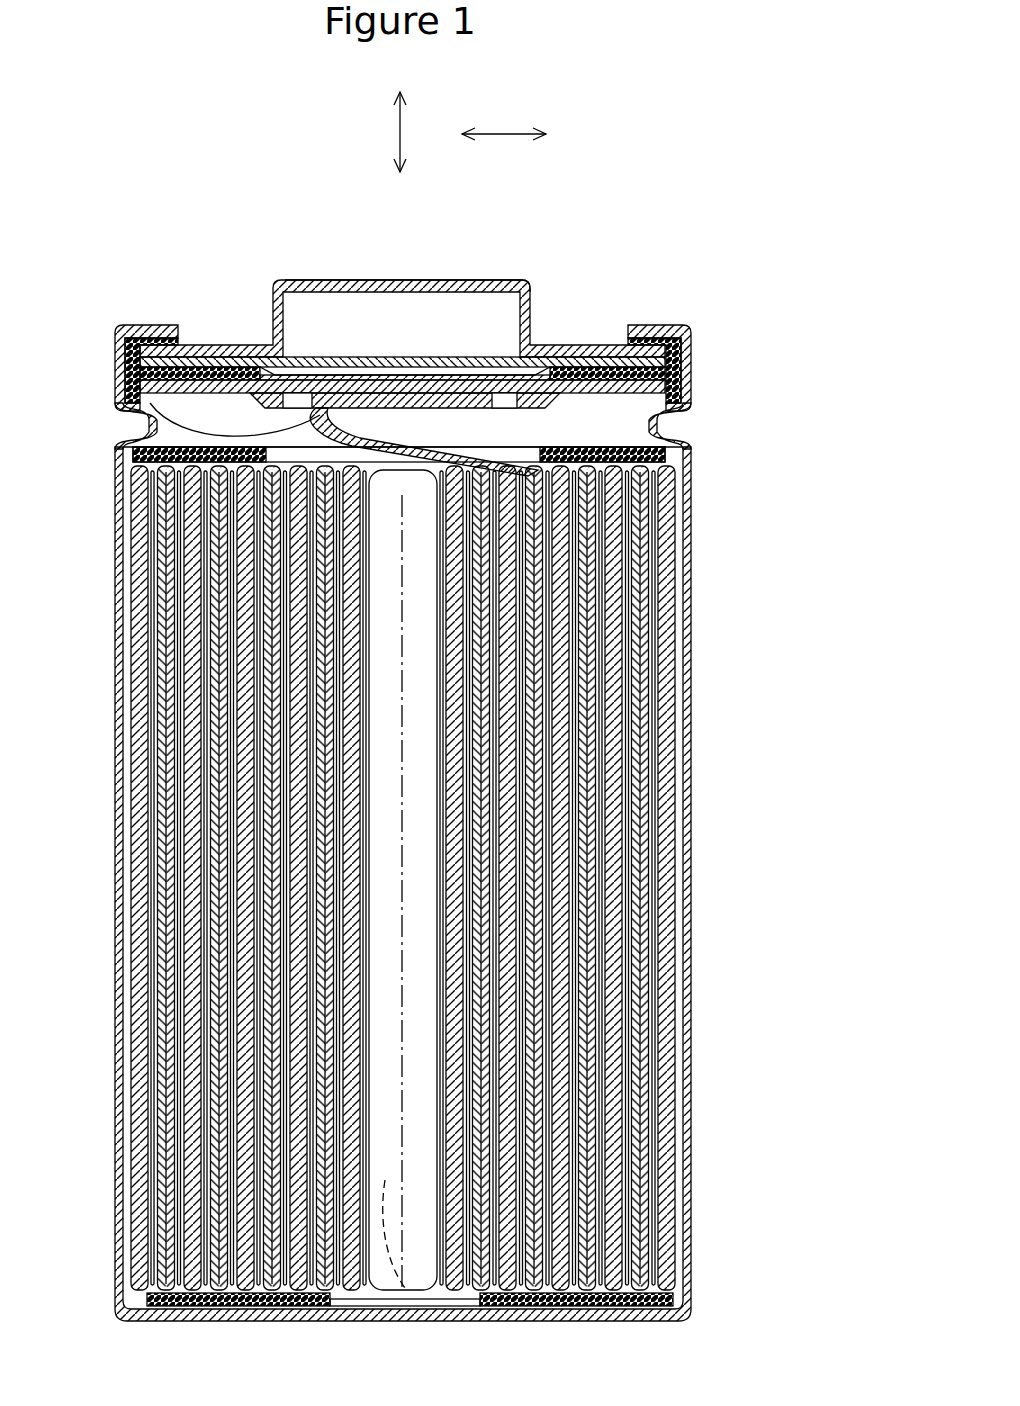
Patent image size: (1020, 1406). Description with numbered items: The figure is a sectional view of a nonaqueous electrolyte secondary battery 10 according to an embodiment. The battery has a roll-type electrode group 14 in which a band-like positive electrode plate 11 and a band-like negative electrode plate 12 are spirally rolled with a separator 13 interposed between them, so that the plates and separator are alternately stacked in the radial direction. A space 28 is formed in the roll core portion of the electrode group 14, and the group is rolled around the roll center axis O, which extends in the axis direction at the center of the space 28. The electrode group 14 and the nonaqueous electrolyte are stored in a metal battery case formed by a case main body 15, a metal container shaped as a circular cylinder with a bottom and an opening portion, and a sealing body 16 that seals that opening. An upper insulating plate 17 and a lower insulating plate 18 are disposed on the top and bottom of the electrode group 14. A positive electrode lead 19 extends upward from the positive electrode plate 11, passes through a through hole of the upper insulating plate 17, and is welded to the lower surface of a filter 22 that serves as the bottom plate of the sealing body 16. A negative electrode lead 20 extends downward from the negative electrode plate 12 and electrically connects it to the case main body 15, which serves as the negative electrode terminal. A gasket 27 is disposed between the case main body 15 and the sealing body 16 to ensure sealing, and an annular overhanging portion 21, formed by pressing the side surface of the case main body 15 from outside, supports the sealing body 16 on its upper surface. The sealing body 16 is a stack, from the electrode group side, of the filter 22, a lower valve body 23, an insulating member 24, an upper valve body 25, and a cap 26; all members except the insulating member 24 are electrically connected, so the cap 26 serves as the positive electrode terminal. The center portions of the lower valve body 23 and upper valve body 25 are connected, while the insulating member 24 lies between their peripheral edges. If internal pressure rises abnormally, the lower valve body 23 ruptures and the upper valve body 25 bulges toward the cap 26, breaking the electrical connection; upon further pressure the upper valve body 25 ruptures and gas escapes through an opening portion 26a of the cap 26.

The nonaqueous electrolyte secondary battery 10 is at (651, 173).
The positive electrode plate 11 is at (637, 962).
The negative electrode plate 12 is at (667, 1000).
The separator 13 is at (682, 1040).
The electrode group 14 is at (762, 950).
The case main body 15 is at (690, 325).
The sealing body 16 is at (413, 279).
The upper insulating plate 17 is at (690, 462).
The lower insulating plate 18 is at (680, 1298).
The positive electrode lead 19 is at (150, 403).
The negative electrode lead 20 is at (132, 1300).
The overhanging portion 21 is at (645, 418).
The filter 22 is at (383, 398).
The lower valve body 23 is at (290, 374).
The insulating member 24 is at (200, 367).
The upper valve body 25 is at (303, 377).
The cap 26 is at (480, 280).
The opening portion 26a is at (522, 281).
The gasket 27 is at (690, 354).
The space 28 is at (354, 1312).
The roll center axis O is at (403, 1290).